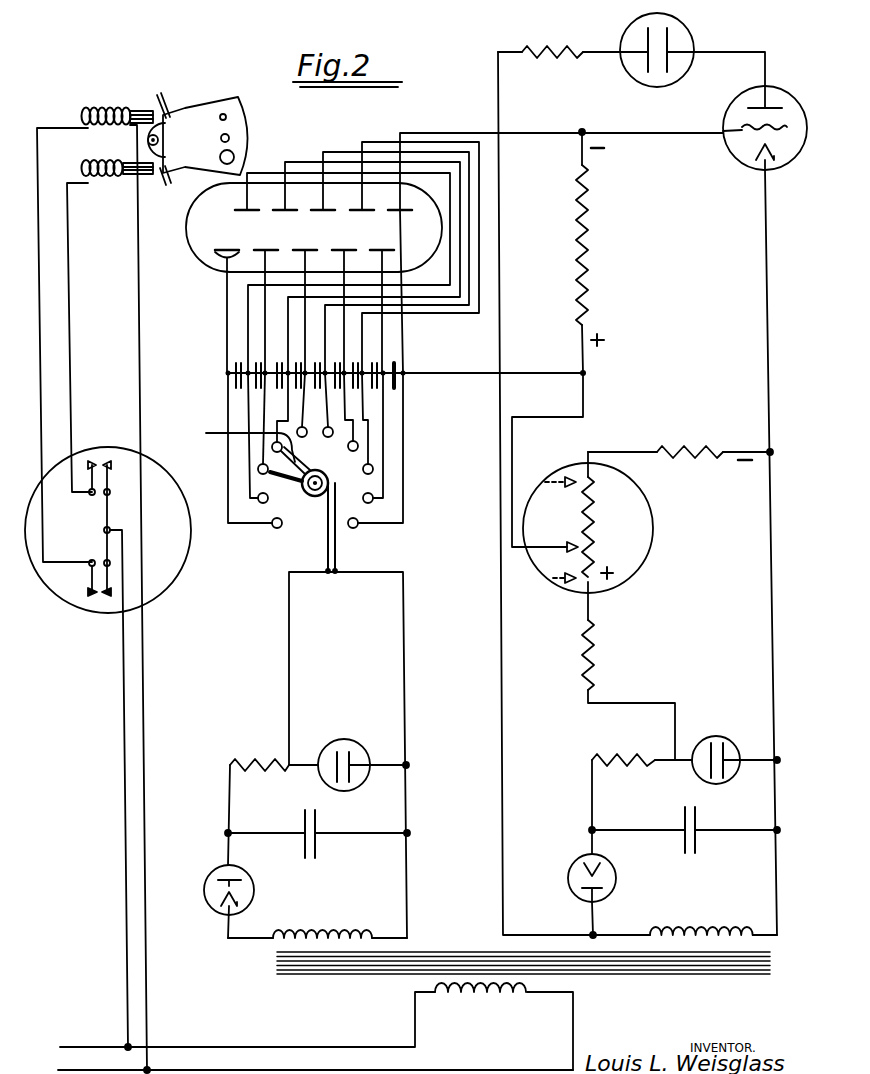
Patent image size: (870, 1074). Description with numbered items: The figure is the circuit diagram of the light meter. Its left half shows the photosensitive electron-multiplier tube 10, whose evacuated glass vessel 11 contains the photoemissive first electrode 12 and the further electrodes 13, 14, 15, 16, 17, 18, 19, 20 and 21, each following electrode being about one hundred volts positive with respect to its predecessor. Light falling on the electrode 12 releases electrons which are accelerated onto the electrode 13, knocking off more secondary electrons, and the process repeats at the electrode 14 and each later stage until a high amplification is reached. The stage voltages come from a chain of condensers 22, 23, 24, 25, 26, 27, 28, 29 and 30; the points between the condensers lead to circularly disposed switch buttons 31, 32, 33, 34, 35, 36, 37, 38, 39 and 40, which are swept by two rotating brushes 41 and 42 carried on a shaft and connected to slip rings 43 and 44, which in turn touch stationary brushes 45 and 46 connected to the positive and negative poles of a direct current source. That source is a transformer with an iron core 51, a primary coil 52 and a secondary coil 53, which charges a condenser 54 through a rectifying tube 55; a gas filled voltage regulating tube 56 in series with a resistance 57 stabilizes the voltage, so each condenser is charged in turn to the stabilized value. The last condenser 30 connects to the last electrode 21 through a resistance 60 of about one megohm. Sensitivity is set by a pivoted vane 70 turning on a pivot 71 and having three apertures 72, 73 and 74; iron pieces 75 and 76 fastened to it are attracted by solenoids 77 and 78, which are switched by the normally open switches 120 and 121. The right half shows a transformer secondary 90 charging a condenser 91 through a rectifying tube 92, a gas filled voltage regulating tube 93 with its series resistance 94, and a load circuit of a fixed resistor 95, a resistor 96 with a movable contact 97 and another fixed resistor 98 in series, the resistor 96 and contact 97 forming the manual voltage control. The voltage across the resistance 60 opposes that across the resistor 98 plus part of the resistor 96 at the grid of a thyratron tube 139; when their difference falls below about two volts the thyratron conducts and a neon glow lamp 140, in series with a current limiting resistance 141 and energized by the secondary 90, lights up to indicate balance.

The electron-multiplier tube 10 is at (327, 222).
The evacuated glass vessel 11 is at (204, 270).
The first electrode 12 is at (227, 301).
The electrode 13 is at (342, 273).
The electrode 14 is at (266, 301).
The electrode 15 is at (366, 267).
The electrode 16 is at (305, 301).
The electrode 17 is at (390, 262).
The electrode 18 is at (344, 301).
The electrode 19 is at (414, 257).
The electrode 20 is at (382, 301).
The last electrode 21 is at (555, 253).
The condenser 22 is at (237, 366).
The condenser 23 is at (256, 366).
The condenser 24 is at (276, 366).
The condenser 25 is at (296, 366).
The condenser 26 is at (315, 366).
The condenser 27 is at (334, 366).
The condenser 28 is at (353, 366).
The condenser 29 is at (371, 366).
The last condenser 30 is at (398, 366).
The switch button 31 is at (265, 461).
The switch button 32 is at (255, 447).
The switch button 33 is at (270, 431).
The switch button 34 is at (278, 422).
The switch button 35 is at (305, 416).
The switch button 36 is at (332, 416).
The switch button 37 is at (355, 422).
The switch button 38 is at (363, 433).
The switch button 39 is at (377, 446).
The switch button 40 is at (375, 459).
The brush 41 is at (286, 493).
The brush 42 is at (248, 447).
The slip ring 43 is at (317, 463).
The slip ring 44 is at (300, 500).
The brush 45 is at (338, 555).
The brush 46 is at (316, 551).
The iron core 51 is at (350, 976).
The primary coil 52 is at (480, 1005).
The secondary coil 53 is at (314, 932).
The condenser 54 is at (318, 851).
The rectifying tube 55 is at (254, 880).
The voltage regulating tube 56 is at (356, 748).
The resistance 57 is at (240, 764).
The resistance 60 is at (594, 230).
The pivoted vane 70 is at (240, 100).
The pivot 71 is at (159, 140).
The aperture 72 is at (212, 117).
The aperture 73 is at (214, 138).
The aperture 74 is at (217, 157).
The iron piece 75 is at (168, 94).
The iron piece 76 is at (163, 187).
The solenoid 77 is at (94, 110).
The solenoid 78 is at (102, 180).
The transformer secondary 90 is at (690, 928).
The condenser 91 is at (698, 845).
The rectifying tube 92 is at (618, 873).
The voltage regulating tube 93 is at (718, 736).
The resistor 94 is at (624, 752).
The fixed resistor 95 is at (596, 668).
The resistor 96 is at (610, 525).
The movable contact 97 is at (543, 548).
The fixed resistor 98 is at (692, 448).
The switch 120 is at (107, 473).
The switch 121 is at (90, 582).
The thyratron tube 139 is at (765, 113).
The glow lamp 140 is at (690, 34).
The resistance 141 is at (533, 50).